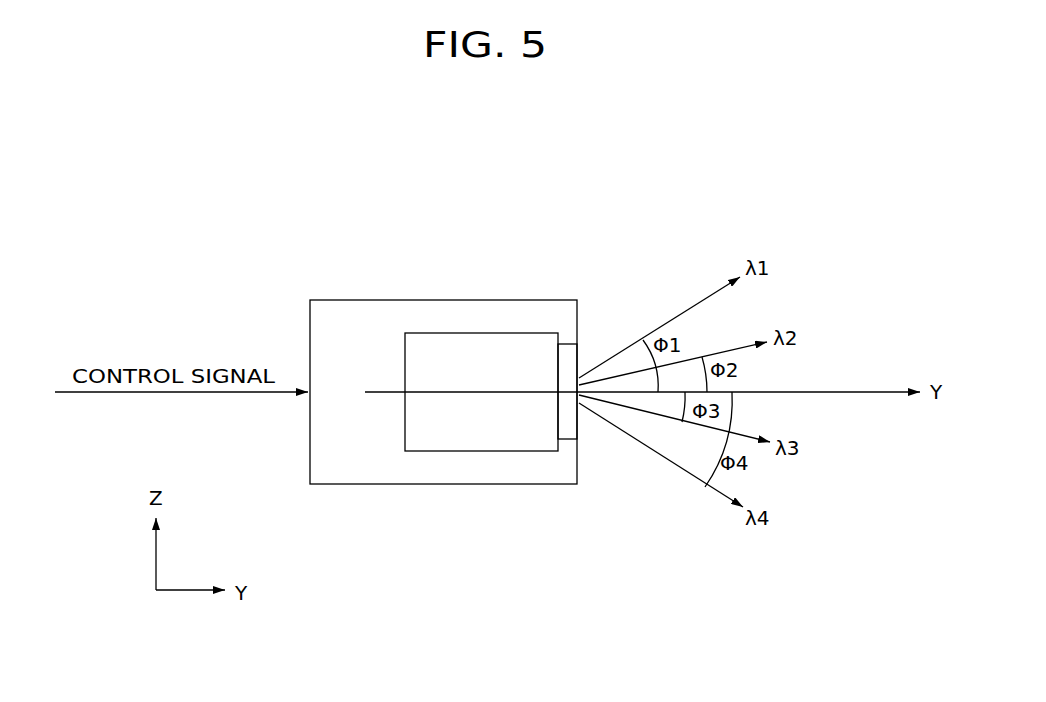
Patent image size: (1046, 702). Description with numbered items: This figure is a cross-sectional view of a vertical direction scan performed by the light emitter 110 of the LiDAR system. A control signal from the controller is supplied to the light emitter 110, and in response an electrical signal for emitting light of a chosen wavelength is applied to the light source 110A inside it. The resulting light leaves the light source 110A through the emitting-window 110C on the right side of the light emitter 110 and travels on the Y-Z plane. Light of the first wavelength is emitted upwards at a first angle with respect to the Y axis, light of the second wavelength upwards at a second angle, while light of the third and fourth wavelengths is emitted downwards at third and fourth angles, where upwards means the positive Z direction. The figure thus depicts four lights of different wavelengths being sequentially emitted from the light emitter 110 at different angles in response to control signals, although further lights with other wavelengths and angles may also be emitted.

The light emitter 110 is at (339, 303).
The light source 110A is at (458, 338).
The emitting-window 110C is at (568, 343).